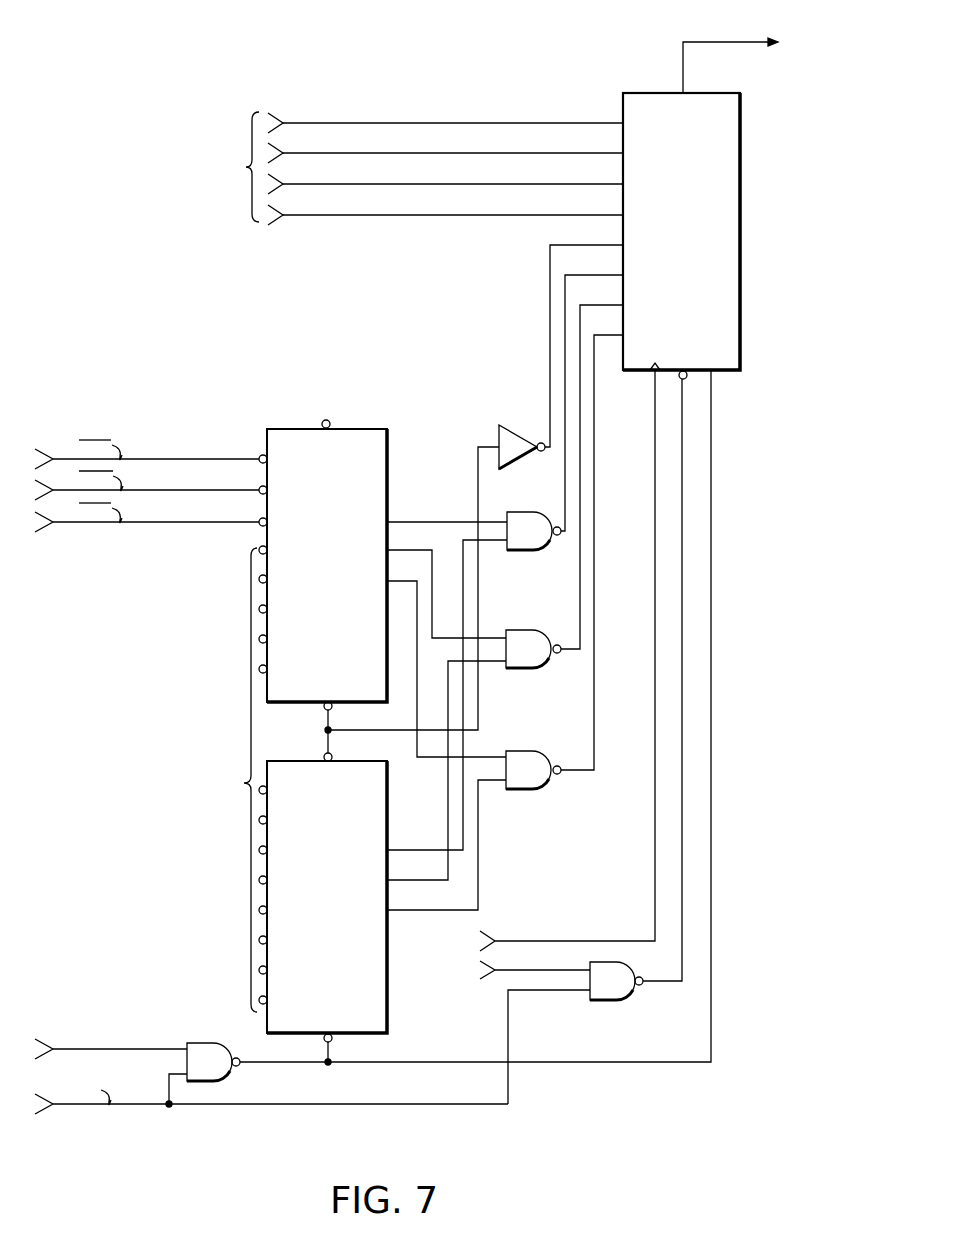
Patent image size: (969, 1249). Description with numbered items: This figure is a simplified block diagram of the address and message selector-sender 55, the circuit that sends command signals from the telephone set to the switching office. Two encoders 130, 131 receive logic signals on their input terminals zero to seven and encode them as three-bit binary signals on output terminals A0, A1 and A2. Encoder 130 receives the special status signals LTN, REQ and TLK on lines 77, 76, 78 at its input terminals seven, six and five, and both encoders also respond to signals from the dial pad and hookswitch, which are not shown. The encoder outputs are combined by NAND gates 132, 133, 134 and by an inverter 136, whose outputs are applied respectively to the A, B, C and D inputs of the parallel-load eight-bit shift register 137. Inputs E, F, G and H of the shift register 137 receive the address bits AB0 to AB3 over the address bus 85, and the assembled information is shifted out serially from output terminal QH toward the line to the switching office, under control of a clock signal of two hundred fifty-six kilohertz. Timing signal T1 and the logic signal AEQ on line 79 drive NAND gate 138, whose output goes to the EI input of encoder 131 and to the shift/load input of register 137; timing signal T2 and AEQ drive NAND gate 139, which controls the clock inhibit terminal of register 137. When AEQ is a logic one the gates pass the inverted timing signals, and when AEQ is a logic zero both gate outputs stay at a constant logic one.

The parallel-load eight-bit shift register 137 is at (666, 88).
The address bus 85 is at (457, 153).
The encoder 130 is at (298, 429).
The encoder 131 is at (389, 1030).
The line 77 is at (211, 458).
The line 76 is at (211, 489).
The line 78 is at (211, 521).
The address and message selector-sender 55 is at (432, 387).
The inverter 136 is at (521, 426).
The NAND gate 134 is at (527, 513).
The NAND gate 133 is at (527, 631).
The NAND gate 132 is at (527, 752).
The NAND gate 138 is at (218, 1040).
The NAND gate 139 is at (610, 1003).
The line 79 is at (72, 1108).